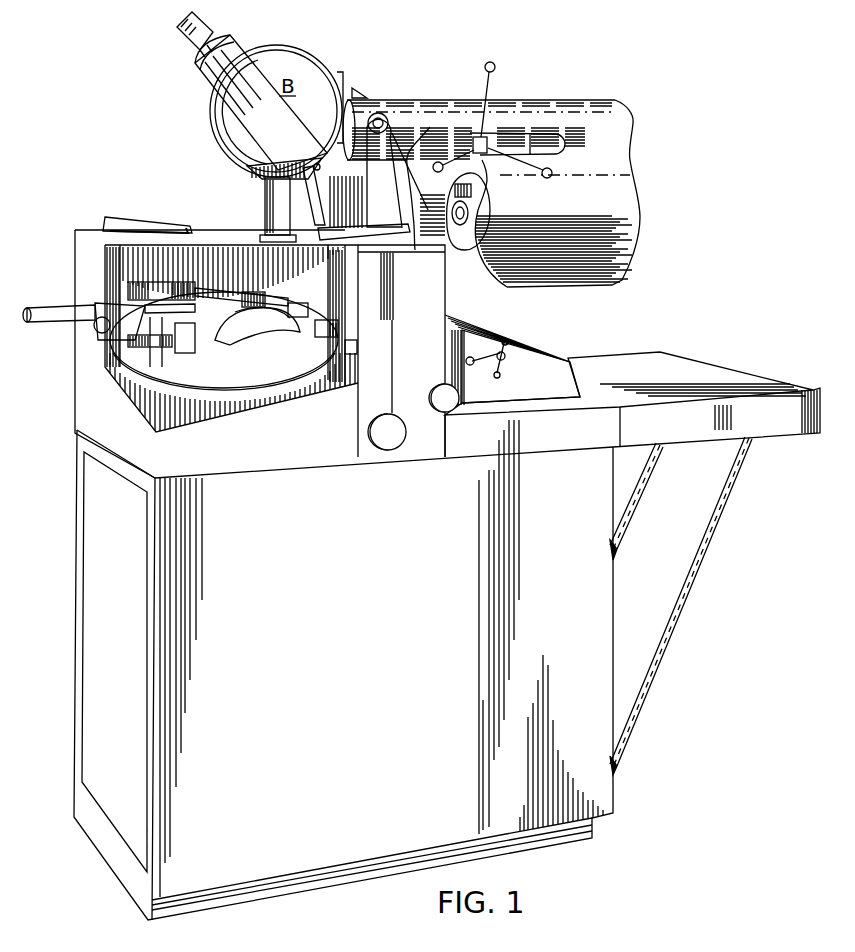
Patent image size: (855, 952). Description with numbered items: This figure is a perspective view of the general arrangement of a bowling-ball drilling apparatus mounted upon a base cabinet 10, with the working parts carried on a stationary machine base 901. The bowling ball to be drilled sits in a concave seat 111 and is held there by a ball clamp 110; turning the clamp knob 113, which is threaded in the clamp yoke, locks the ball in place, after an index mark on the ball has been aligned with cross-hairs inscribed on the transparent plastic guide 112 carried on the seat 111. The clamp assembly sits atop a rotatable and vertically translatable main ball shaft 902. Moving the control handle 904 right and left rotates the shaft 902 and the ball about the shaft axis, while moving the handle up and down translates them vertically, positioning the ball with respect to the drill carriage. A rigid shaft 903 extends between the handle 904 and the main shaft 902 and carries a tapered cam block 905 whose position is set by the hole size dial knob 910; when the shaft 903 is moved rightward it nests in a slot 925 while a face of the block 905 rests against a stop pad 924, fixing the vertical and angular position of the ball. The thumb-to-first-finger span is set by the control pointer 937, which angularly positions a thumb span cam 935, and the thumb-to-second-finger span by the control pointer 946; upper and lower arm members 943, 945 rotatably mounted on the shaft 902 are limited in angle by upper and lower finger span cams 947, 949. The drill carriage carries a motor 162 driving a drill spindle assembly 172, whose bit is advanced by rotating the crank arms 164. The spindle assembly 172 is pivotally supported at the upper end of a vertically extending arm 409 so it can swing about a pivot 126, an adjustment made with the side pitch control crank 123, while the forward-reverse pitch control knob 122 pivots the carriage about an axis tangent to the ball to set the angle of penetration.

The base cabinet 10 is at (310, 590).
The ball clamp 110 is at (205, 82).
The concave seat 111 is at (250, 175).
The transparent plastic guide 112 is at (327, 90).
The clamp knob 113 is at (178, 37).
The forward-reverse pitch control knob 122 is at (440, 412).
The side pitch control crank 123 is at (514, 356).
The pivot 126 is at (380, 113).
The motor 162 is at (478, 240).
The crank arms 164 is at (493, 69).
The drill spindle assembly 172 is at (390, 100).
The vertically extending arm 409 is at (384, 255).
The machine base 901 is at (85, 272).
The main ball shaft 902 is at (268, 212).
The rigid shaft 903 is at (212, 307).
The control handle 904 is at (25, 316).
The tapered cam block 905 is at (100, 368).
The hole size dial knob 910 is at (96, 340).
The stop pad 924 is at (338, 340).
The slot 925 is at (285, 335).
The thumb span cam 935 is at (358, 348).
The control pointer 937 is at (430, 127).
The upper arm member 943 is at (220, 290).
The lower arm member 945 is at (158, 408).
The control pointer 946 is at (106, 218).
The upper finger span cam 947 is at (127, 283).
The lower finger span cam 949 is at (110, 380).